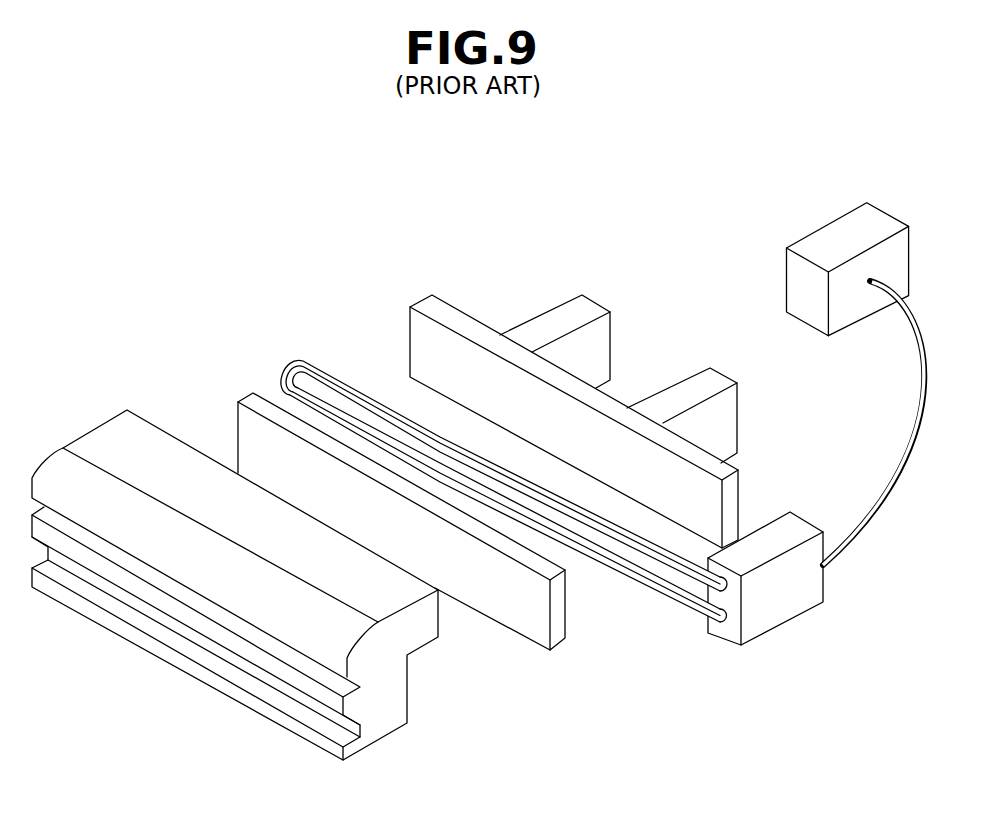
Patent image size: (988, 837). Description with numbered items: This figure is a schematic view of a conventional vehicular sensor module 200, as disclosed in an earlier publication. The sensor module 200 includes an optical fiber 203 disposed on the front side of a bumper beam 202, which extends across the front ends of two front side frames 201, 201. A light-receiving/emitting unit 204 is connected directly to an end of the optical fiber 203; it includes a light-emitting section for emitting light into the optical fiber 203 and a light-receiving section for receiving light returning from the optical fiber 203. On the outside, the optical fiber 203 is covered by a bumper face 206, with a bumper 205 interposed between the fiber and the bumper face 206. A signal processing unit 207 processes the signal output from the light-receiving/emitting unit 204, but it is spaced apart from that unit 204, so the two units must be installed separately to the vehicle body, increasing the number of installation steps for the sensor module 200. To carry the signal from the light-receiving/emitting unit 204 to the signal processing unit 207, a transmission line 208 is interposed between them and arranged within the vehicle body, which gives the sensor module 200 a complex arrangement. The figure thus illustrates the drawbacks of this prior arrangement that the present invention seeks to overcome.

The sensor module 200 is at (168, 155).
The front side frame 201 is at (562, 313).
The bumper beam 202 is at (420, 298).
The optical fiber 203 is at (306, 356).
The light-receiving/emitting unit 204 is at (779, 529).
The bumper 205 is at (243, 395).
The bumper face 206 is at (96, 437).
The signal processing unit 207 is at (837, 245).
The transmission line 208 is at (859, 536).